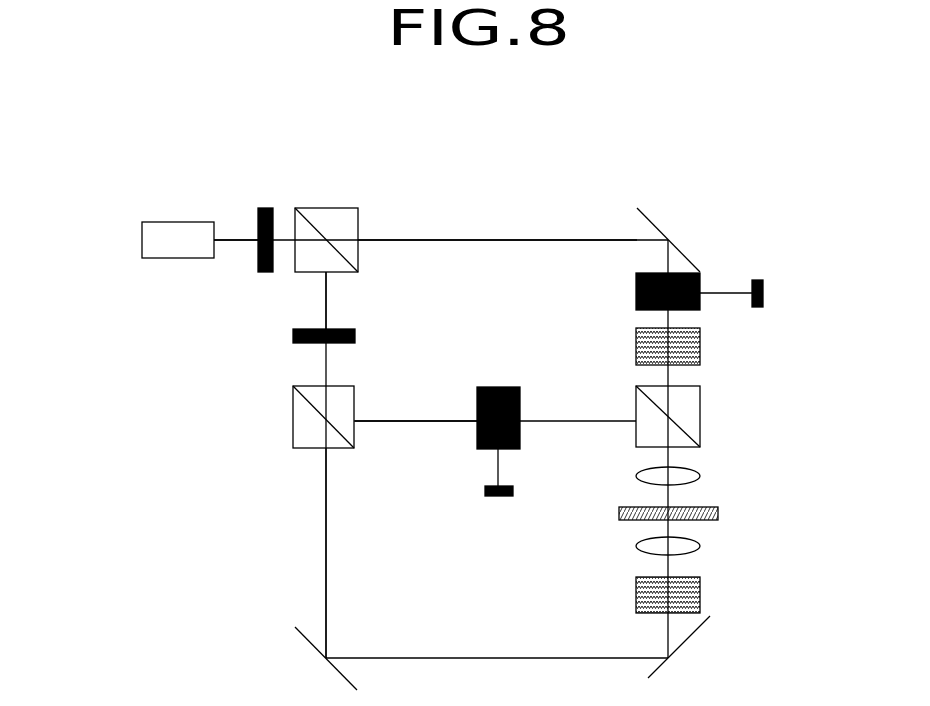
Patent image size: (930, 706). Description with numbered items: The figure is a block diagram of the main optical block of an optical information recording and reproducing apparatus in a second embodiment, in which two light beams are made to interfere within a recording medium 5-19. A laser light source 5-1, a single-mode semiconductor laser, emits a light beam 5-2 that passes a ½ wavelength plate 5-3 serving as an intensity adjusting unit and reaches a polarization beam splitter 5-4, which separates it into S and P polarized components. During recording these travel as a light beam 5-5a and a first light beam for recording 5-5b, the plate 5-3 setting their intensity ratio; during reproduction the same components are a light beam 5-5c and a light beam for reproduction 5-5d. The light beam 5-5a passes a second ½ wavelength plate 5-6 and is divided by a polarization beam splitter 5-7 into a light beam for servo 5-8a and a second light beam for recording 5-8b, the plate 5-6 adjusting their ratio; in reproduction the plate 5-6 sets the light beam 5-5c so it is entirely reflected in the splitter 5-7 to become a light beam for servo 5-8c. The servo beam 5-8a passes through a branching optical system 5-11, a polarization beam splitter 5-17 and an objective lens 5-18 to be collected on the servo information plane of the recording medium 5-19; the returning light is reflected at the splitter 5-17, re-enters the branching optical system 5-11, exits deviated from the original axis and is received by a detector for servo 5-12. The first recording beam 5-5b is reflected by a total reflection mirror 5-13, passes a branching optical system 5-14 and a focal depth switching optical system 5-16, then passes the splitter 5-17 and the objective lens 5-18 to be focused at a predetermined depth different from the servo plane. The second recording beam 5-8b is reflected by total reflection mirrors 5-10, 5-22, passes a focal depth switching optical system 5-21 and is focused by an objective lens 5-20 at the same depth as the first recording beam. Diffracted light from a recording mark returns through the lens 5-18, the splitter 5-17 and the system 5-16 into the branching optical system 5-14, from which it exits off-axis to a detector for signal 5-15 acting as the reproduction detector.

The laser light source 5-1 is at (177, 222).
The light beam 5-2 is at (236, 240).
The ½ wavelength plate 5-3 is at (265, 208).
The polarization beam splitter 5-4 is at (325, 208).
The light beam 5-5a is at (326, 305).
The first light beam for recording 5-5b is at (475, 239).
The light beam 5-5c is at (174, 301).
The light beam for reproduction 5-5d is at (497, 168).
The ½ wavelength plate 5-6 is at (293, 335).
The polarization beam splitter 5-7 is at (293, 426).
The light beam for servo 5-8a is at (415, 421).
The second light beam for recording 5-8b is at (326, 537).
The light beam for servo 5-8c is at (415, 371).
The total reflection mirror 5-10 is at (308, 643).
The branching optical system 5-11 is at (497, 387).
The detector for servo 5-12 is at (512, 497).
The total reflection mirror 5-13 is at (668, 239).
The branching optical system 5-14 is at (700, 273).
The detector for signal 5-15 is at (763, 293).
The focal depth switching optical system 5-16 is at (700, 345).
The polarization beam splitter 5-17 is at (700, 408).
The objective lens 5-18 is at (700, 476).
The recording medium 5-19 is at (718, 510).
The objective lens 5-20 is at (700, 545).
The focal depth switching optical system 5-21 is at (700, 590).
The total reflection mirror 5-22 is at (697, 633).